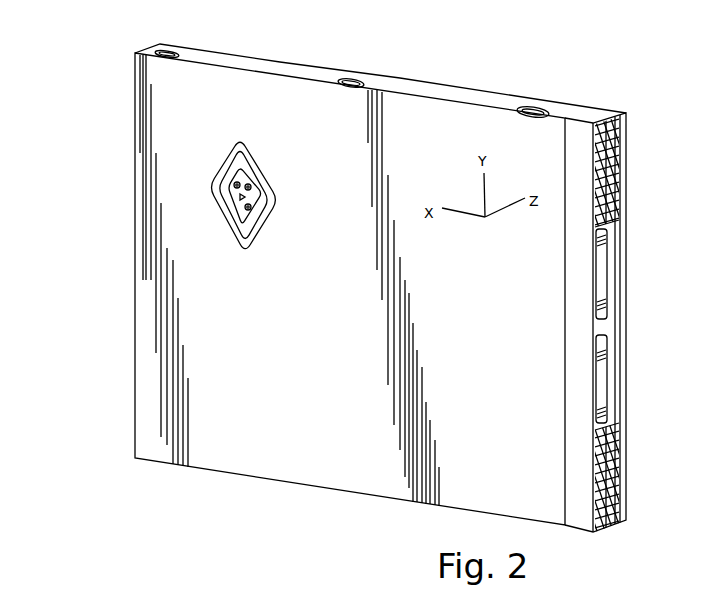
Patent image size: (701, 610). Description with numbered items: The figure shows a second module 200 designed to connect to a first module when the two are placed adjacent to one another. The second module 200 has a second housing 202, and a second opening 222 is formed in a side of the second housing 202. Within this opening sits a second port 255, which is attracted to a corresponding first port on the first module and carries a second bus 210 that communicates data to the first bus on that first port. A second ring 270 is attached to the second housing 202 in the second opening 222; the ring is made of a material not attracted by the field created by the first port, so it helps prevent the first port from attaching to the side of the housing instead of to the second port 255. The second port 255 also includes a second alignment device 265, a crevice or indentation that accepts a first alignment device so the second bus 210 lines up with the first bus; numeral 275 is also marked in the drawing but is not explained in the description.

The second module 200 is at (283, 61).
The second housing 202 is at (212, 411).
The second bus 210 is at (212, 197).
The second opening 222 is at (228, 248).
The second port 255 is at (238, 198).
The second alignment device 265 is at (230, 168).
The second ring 270 is at (237, 233).
The alignment indicator 275 is at (232, 224).